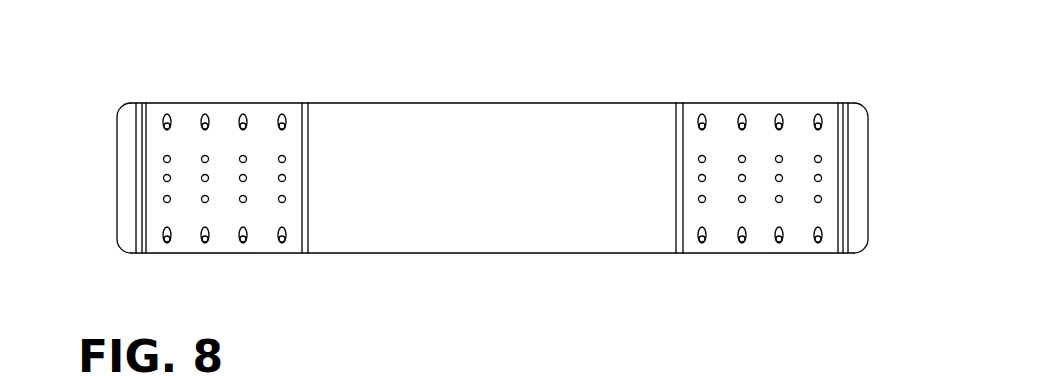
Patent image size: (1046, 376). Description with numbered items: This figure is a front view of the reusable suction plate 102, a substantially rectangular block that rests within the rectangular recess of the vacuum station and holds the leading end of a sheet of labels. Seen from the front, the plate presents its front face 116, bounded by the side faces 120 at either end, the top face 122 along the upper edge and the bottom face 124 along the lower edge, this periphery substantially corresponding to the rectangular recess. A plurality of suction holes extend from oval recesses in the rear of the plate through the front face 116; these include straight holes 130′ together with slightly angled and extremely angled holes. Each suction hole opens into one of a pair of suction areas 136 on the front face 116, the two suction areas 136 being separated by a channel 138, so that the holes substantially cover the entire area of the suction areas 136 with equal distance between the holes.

The reusable suction plate 102 is at (528, 90).
The front face 116 is at (501, 201).
The side faces 120 is at (118, 170).
The top face 122 is at (608, 103).
The bottom face 124 is at (582, 254).
The straight holes 130′ is at (202, 177).
The suction areas 136 is at (218, 102).
The channel 138 is at (397, 135).